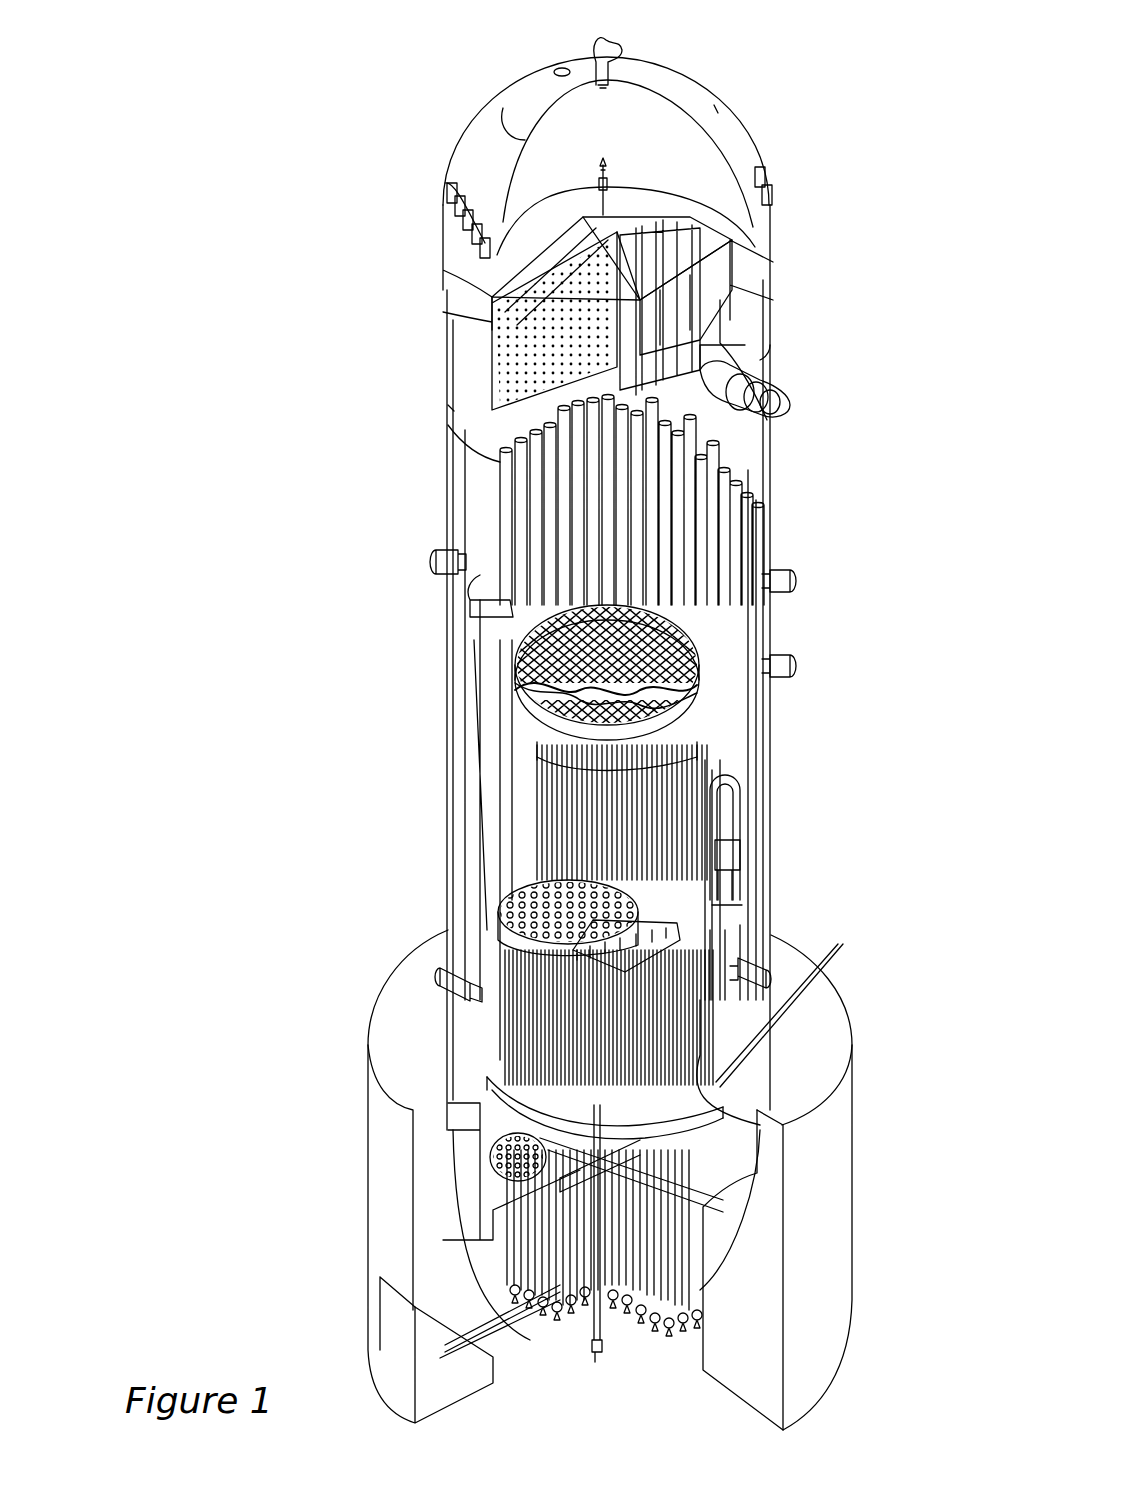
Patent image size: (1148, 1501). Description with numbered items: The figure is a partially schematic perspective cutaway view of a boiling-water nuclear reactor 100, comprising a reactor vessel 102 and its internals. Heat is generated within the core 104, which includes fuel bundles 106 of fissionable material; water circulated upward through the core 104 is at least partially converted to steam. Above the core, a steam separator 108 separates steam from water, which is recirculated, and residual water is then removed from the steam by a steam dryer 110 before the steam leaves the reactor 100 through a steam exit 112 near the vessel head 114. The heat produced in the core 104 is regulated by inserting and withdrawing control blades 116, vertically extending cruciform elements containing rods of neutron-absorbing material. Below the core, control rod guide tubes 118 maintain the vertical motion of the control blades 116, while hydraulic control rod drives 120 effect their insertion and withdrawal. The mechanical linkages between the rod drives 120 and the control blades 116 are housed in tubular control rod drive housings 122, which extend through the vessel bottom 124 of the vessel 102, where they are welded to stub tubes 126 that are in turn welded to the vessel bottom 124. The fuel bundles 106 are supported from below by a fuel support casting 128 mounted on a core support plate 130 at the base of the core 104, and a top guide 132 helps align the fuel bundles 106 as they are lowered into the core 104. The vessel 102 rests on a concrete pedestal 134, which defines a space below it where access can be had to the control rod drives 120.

The nuclear reactor 100 is at (306, 233).
The reactor vessel 102 is at (448, 460).
The core 104 is at (405, 680).
The fuel bundles 106 is at (667, 780).
The steam separator 108 is at (730, 528).
The steam dryer 110 is at (722, 255).
The steam exit 112 is at (772, 404).
The vessel head 114 is at (700, 86).
The control blades 116 is at (545, 1020).
The control rod guide tubes 118 is at (802, 1007).
The hydraulic control rod drives 120 is at (663, 1340).
The control rod drive housings 122 is at (530, 1080).
The vessel bottom 124 is at (745, 1128).
The stub tubes 126 is at (525, 1125).
The fuel support casting 128 is at (722, 932).
The core support plate 130 is at (507, 930).
The top guide 132 is at (520, 692).
The concrete pedestal 134 is at (852, 1262).